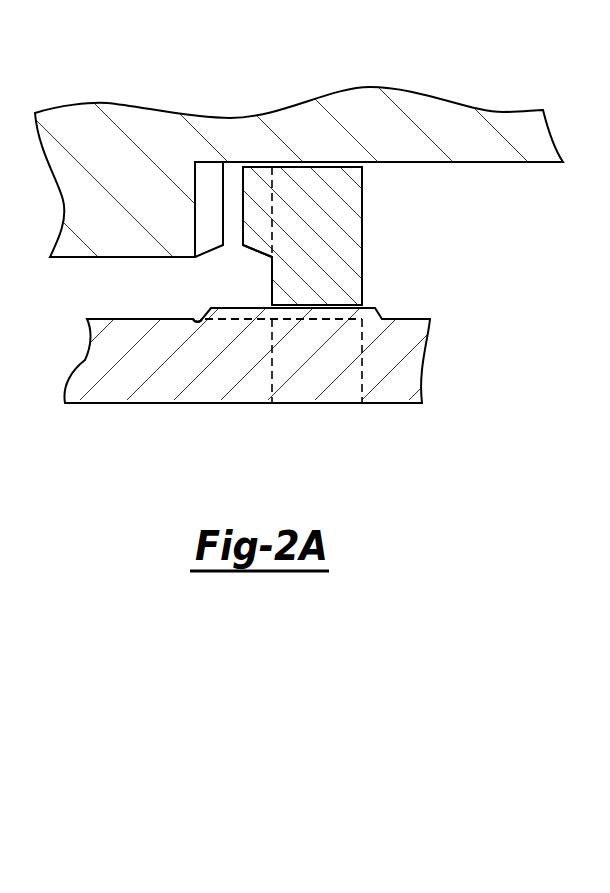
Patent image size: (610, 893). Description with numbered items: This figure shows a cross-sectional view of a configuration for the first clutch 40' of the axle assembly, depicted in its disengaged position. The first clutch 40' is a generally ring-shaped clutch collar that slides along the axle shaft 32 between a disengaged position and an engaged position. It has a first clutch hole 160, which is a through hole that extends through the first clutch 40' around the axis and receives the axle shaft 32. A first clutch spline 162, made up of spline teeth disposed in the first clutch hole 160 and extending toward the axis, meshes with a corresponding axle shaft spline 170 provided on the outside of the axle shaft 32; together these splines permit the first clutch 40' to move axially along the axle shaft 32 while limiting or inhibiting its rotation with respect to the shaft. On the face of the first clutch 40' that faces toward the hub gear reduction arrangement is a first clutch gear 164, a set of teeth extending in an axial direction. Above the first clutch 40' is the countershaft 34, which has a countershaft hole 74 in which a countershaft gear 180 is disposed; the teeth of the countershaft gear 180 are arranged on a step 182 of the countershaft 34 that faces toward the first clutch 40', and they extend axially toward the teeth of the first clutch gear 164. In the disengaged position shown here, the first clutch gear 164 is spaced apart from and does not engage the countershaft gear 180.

The countershaft 34 is at (87, 128).
The step 182 is at (196, 191).
The countershaft gear 180 is at (224, 195).
The first clutch gear 164 is at (257, 167).
The first clutch 40' is at (373, 236).
The axle shaft 32 is at (177, 363).
The axle shaft spline 170 is at (203, 313).
The countershaft hole 74 is at (170, 284).
The first clutch spline 162 is at (355, 312).
The first clutch hole 160 is at (300, 305).